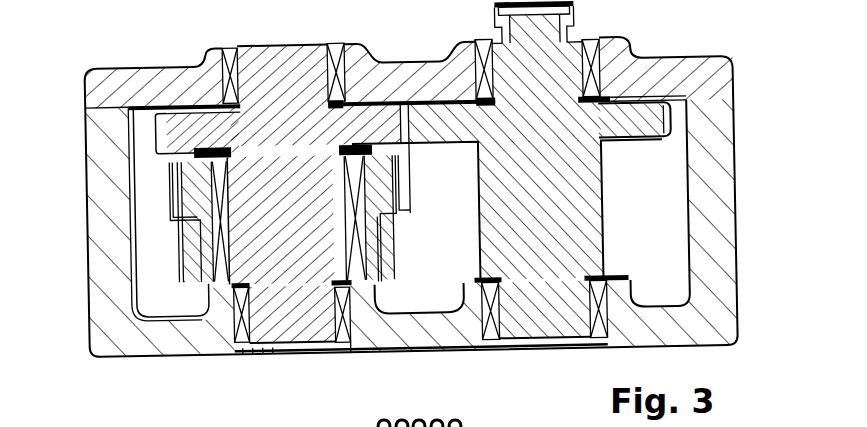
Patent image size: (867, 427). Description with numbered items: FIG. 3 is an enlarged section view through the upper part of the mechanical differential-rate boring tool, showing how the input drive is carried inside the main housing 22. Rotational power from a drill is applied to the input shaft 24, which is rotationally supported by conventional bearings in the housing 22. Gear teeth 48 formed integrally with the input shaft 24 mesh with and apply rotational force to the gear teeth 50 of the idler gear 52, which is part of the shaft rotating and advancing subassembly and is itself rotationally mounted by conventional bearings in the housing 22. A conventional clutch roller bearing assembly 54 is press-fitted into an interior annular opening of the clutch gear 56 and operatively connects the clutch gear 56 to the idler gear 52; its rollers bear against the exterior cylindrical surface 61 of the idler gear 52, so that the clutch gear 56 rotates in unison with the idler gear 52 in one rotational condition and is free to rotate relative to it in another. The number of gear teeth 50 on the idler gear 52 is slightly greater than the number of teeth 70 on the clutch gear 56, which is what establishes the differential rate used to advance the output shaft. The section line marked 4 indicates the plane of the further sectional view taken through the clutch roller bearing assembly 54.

The housing 22 is at (118, 66).
The piston 24 is at (583, 196).
The retaining lip 48 is at (675, 146).
The tab 50 is at (163, 128).
The inner piston 52 is at (245, 236).
The inner piston 54 is at (360, 256).
The cup 56 is at (388, 213).
The cup 61 is at (208, 276).
The cup 70 is at (182, 215).
The section line 4- 4 is at (195, 154).